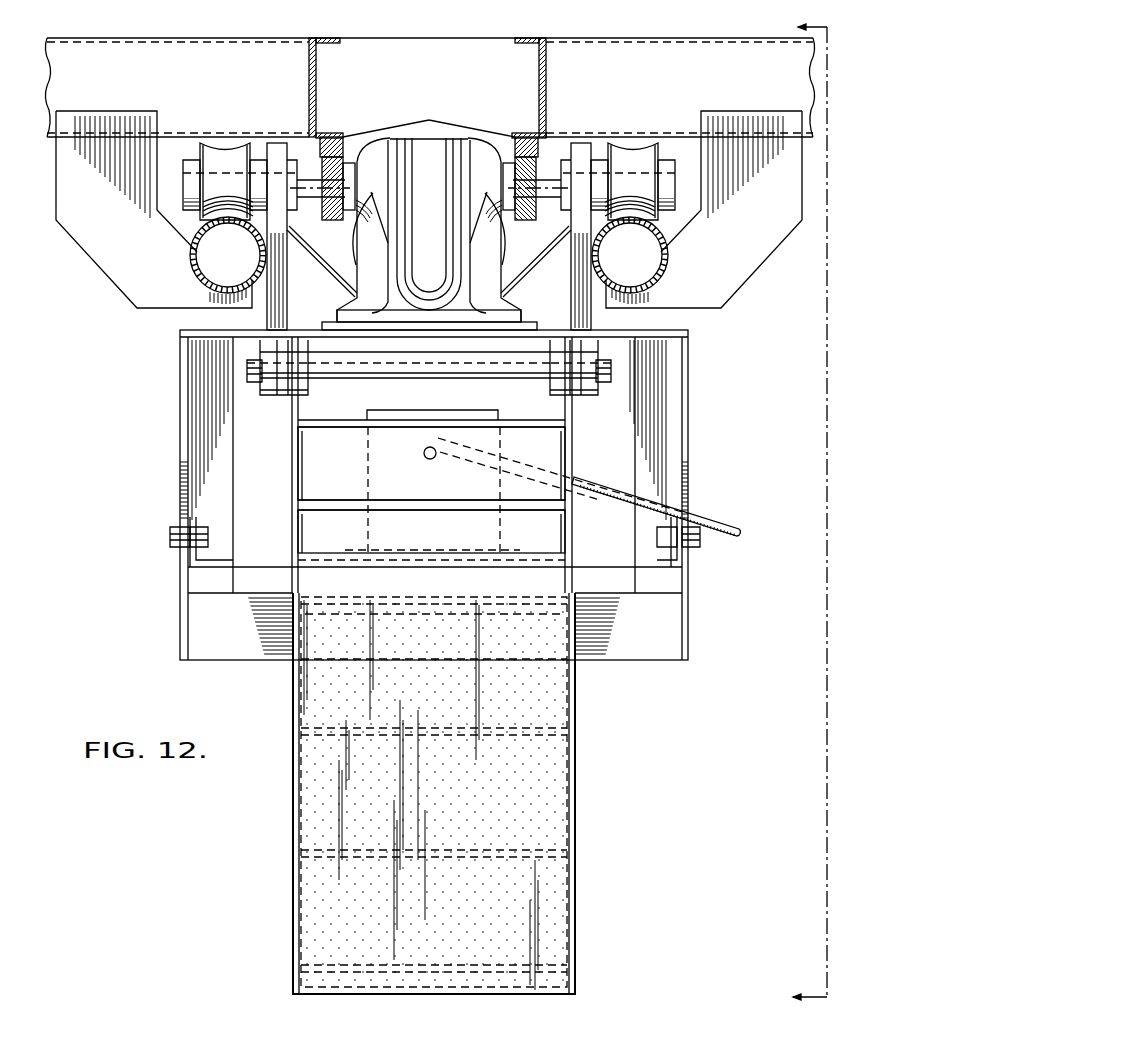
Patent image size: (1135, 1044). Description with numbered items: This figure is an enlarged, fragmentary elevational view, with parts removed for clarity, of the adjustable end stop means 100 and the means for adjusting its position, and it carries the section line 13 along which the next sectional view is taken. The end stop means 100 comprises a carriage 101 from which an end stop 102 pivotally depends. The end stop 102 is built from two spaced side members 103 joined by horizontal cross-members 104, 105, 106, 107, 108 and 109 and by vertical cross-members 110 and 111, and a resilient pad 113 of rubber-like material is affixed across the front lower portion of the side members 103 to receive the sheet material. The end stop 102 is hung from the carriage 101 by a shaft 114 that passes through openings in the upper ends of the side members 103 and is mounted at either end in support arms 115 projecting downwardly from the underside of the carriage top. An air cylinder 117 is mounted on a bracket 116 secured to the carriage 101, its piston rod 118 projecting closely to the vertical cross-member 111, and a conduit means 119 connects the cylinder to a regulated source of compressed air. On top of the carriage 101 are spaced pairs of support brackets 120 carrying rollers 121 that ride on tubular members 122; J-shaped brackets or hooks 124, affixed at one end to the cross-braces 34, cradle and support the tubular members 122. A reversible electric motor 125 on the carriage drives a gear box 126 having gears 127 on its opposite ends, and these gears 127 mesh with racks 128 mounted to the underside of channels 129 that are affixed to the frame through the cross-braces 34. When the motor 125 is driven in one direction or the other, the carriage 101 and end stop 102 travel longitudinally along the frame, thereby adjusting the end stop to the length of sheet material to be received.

The section line 13— 13 is at (812, 512).
The cross-brace 34 is at (214, 38).
The adjustable end stop means 100 is at (180, 486).
The carriage 101 is at (690, 413).
The end stop 102 is at (292, 702).
The side members 103 is at (292, 484).
The horizontal cross-member 104 is at (474, 973).
The horizontal cross-member 105 is at (503, 856).
The horizontal cross-member 106 is at (507, 738).
The horizontal cross-member 107 is at (524, 600).
The horizontal cross-member 108 is at (514, 506).
The horizontal cross-member 109 is at (528, 420).
The vertical cross-member 110 is at (354, 537).
The vertical cross-member 111 is at (343, 457).
The resilient pad 113 is at (438, 653).
The shaft 114 is at (452, 379).
The support arms 115 is at (278, 345).
The bracket 116 is at (257, 560).
The air cylinder 117 is at (397, 412).
The piston rod 118 is at (430, 461).
The conduit means 119 is at (710, 518).
The support brackets 120 is at (574, 292).
The rollers 121 is at (227, 158).
The tubular members 122 is at (197, 280).
The J-shaped brackets or hooks 124 is at (150, 313).
The electric motor 125 is at (360, 267).
The gear box 126 is at (485, 188).
The gears 127 is at (323, 218).
The racks 128 is at (347, 135).
The channels 129 is at (317, 72).